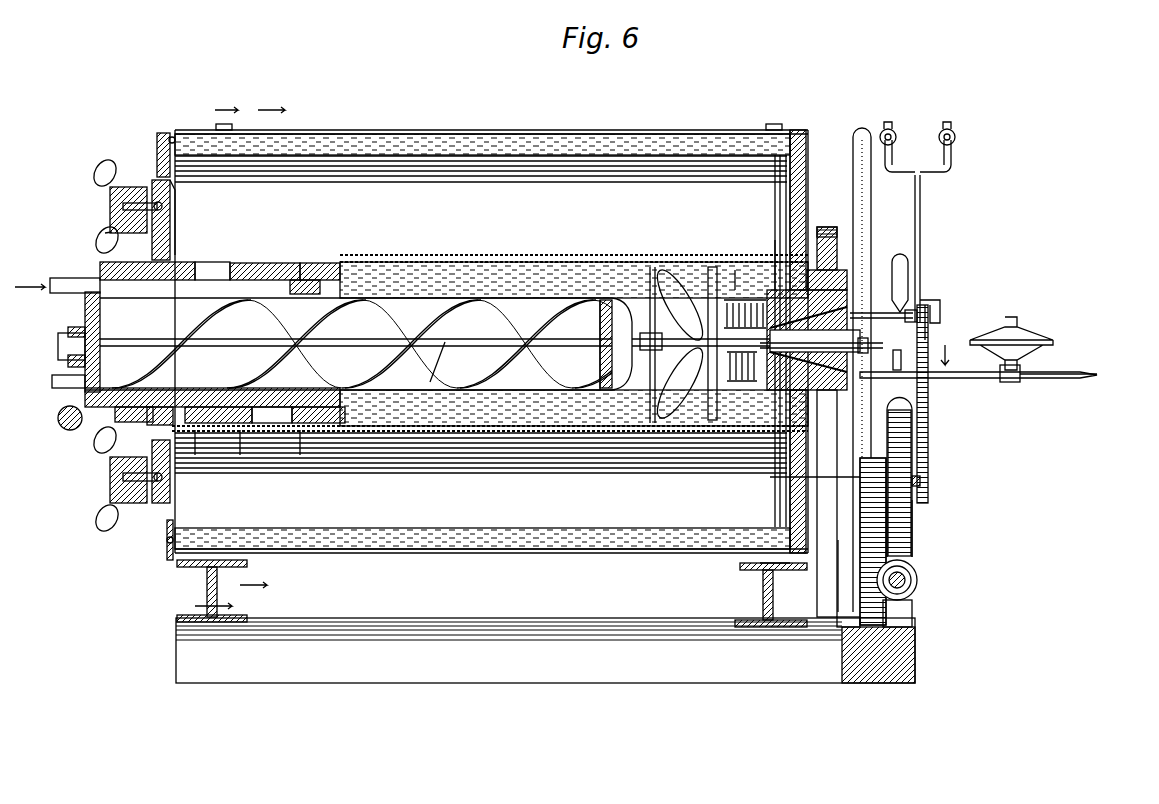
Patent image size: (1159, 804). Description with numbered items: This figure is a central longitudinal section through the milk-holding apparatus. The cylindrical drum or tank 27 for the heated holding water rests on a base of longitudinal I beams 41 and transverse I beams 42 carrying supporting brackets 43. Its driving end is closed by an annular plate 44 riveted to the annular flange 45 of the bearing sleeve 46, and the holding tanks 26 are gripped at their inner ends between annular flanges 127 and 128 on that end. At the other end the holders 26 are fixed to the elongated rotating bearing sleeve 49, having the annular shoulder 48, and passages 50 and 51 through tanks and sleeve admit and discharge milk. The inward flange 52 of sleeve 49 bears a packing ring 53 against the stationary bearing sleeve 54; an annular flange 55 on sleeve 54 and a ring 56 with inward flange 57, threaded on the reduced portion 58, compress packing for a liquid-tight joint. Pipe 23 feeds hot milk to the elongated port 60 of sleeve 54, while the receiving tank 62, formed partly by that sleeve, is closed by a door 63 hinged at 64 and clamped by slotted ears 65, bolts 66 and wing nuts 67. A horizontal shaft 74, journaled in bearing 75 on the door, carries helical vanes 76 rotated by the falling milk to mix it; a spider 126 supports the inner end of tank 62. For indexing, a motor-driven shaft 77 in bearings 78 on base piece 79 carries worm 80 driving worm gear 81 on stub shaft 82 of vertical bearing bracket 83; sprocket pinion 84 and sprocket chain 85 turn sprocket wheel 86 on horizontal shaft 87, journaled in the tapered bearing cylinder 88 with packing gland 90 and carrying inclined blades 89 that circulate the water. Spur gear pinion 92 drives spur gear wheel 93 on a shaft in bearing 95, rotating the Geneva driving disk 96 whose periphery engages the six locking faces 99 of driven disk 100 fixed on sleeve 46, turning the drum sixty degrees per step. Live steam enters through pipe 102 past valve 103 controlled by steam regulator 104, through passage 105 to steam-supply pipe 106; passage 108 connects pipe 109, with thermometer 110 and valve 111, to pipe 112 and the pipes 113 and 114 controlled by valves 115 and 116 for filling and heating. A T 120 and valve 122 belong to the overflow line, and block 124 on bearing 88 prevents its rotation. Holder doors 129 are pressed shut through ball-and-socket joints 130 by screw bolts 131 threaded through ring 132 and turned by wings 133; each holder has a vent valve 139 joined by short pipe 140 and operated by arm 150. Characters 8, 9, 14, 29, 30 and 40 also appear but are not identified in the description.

The section line 8- 8 is at (210, 352).
The section line 9- 9 is at (262, 337).
The direction arrow 14 is at (954, 349).
The pipe 23 is at (72, 278).
The holding tanks 26 is at (446, 347).
The tank 27 is at (500, 132).
The lug 29 is at (226, 124).
The outlet pipe 30 is at (70, 388).
The insulating jacket 40 is at (630, 148).
The longitudinal I beams 41 is at (545, 650).
The transverse I beams 42 is at (217, 605).
The supporting brackets 43 is at (232, 560).
The annular plate 44 is at (800, 215).
The annular flange 45 is at (835, 227).
The bearing sleeve 46 is at (778, 262).
The annular shoulder 48 is at (194, 443).
The bearing sleeve 49 is at (249, 442).
The passage 50 is at (235, 262).
The passage 51 is at (309, 442).
The inwardly projecting flange 52 is at (345, 275).
The annular packing ring 53 is at (335, 263).
The stationary bearing sleeve 54 is at (300, 263).
The annular flange 55 is at (135, 410).
The ring 56 is at (102, 238).
The inwardly projecting flange 57 is at (120, 400).
The reduced threaded portion 58 is at (125, 425).
The elongated port 60 is at (270, 262).
The tank 62 is at (478, 298).
The door 63 is at (85, 312).
The hinge 64 is at (58, 420).
The slotted ears 65 is at (68, 361).
The bolts 66 is at (58, 348).
The wing nuts 67 is at (68, 332).
The horizontal shaft 74 is at (432, 400).
The bearing 75 is at (610, 390).
The helical vanes 76 is at (535, 400).
The shaft 77 is at (906, 581).
The bearings 78 is at (912, 615).
The base piece 79 is at (912, 655).
The worm 80 is at (917, 575).
The worm gear 81 is at (912, 530).
The stub shaft 82 is at (922, 482).
The vertical bearing bracket 83 is at (890, 515).
The sprocket pinion 84 is at (912, 470).
The sprocket chain 85 is at (927, 418).
The sprocket wheel 86 is at (930, 355).
The horizontal shaft 87 is at (928, 302).
The bearing cylinder 88 is at (840, 300).
The inclined blades 89 is at (672, 392).
The packing gland 90 is at (918, 312).
The spur gear pinion 92 is at (802, 480).
The spur gear wheel 93 is at (838, 560).
The bearing 95 is at (825, 560).
The driving disk 96 is at (825, 622).
The locking faces 99 is at (853, 210).
The driven disk 100 is at (830, 278).
The pipe 102 is at (1075, 372).
The valve 103 is at (1010, 382).
The steam regulator 104 is at (1025, 330).
The passage 105 is at (752, 400).
The steam-supply pipe 106 is at (730, 400).
The passage 108 is at (778, 258).
The pipe 109 is at (905, 312).
The thermometer 110 is at (908, 270).
The valve 111 is at (940, 318).
The pipe 112 is at (922, 218).
The pipe 113 is at (893, 156).
The pipe 114 is at (953, 156).
The valve 115 is at (893, 130).
The valve 116 is at (956, 134).
The T 120 is at (712, 267).
The valve 122 is at (903, 358).
The block 124 is at (870, 352).
The spider 126 is at (652, 423).
The annular flange 127 is at (800, 140).
The annular flange 128 is at (760, 225).
The doors 129 is at (172, 195).
The ball-and-socket joints 130 is at (162, 206).
The screw bolts 131 is at (128, 185).
The ring 132 is at (102, 167).
The wings 133 is at (100, 183).
The valve 139 is at (173, 136).
The short pipe 140 is at (158, 176).
The arm 150 is at (163, 133).